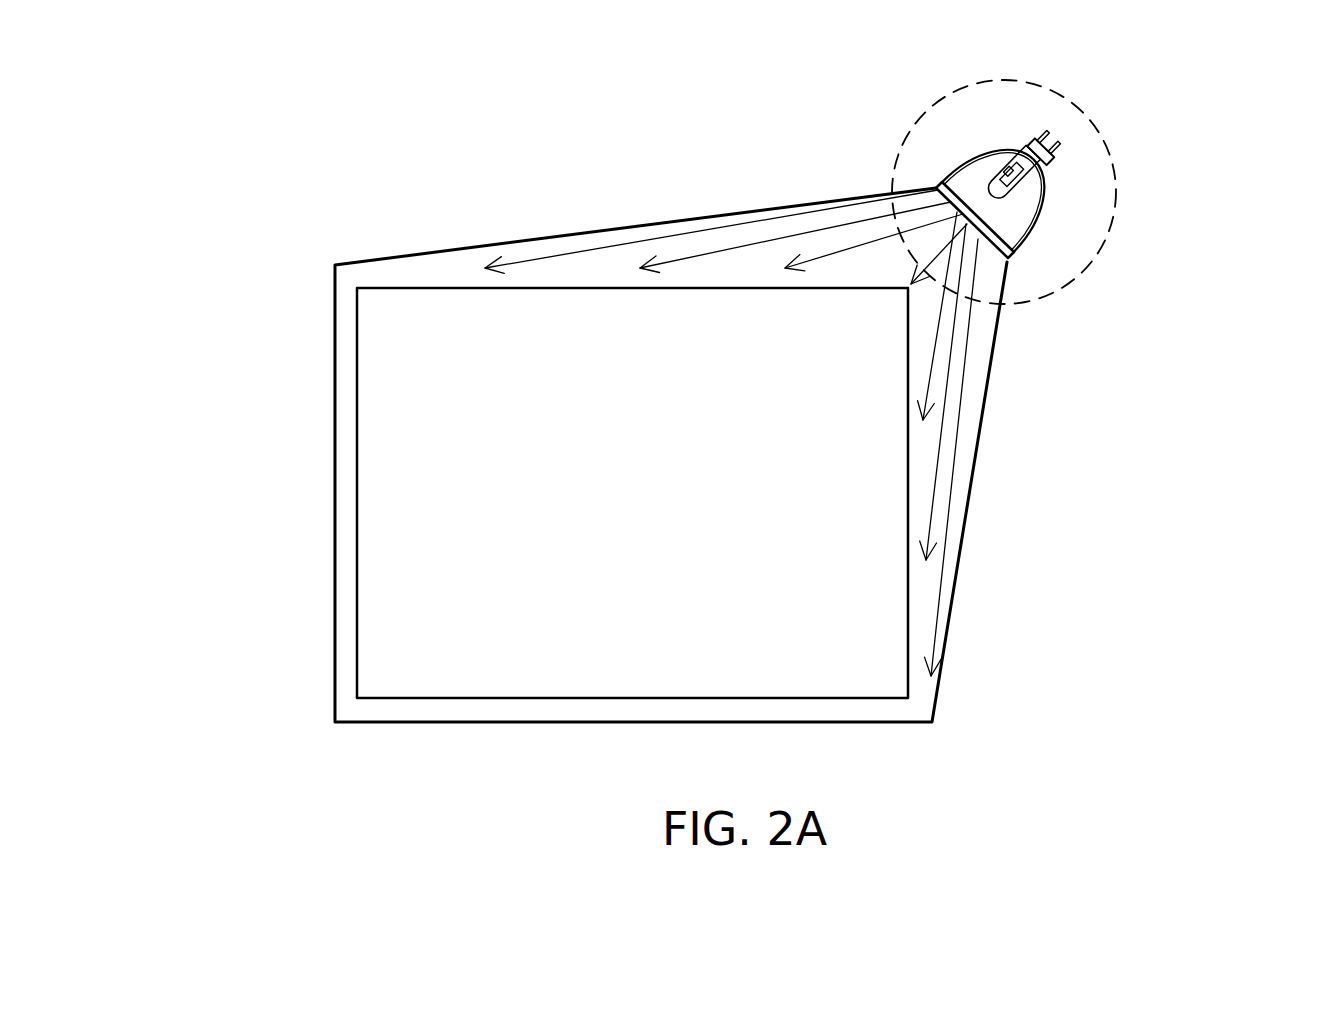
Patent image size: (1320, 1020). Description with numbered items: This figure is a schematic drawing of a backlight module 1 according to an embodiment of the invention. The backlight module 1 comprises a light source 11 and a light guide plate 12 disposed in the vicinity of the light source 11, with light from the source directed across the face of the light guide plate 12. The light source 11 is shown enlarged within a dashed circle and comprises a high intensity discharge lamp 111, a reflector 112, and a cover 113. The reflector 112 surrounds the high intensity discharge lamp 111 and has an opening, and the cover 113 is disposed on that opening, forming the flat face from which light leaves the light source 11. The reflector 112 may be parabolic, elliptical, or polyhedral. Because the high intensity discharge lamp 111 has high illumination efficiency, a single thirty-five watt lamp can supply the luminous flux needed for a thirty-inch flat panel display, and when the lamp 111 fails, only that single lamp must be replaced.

The backlight module 1 is at (255, 175).
The light source 11 is at (1225, 327).
The high intensity discharge lamp 111 is at (1057, 155).
The reflector 112 is at (1042, 214).
The cover 113 is at (1003, 270).
The light guide plate 12 is at (333, 473).